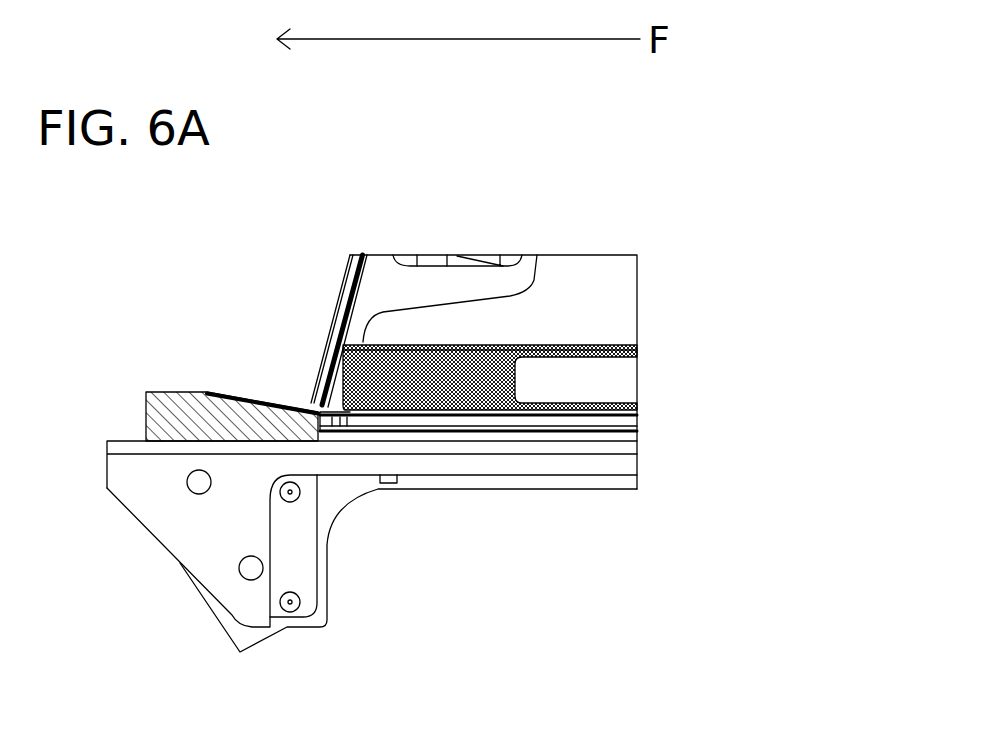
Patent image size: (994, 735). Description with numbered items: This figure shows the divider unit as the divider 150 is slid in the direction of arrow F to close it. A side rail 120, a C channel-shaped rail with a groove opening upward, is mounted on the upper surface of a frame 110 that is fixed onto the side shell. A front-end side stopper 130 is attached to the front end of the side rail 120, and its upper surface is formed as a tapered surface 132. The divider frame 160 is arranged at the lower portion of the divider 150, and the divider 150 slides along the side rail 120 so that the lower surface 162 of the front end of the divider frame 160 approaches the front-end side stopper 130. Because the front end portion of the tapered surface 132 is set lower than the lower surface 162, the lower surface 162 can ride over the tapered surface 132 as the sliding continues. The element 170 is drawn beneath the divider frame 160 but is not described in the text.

The frame 110 is at (370, 463).
The side rail 120 is at (345, 412).
The front-end side stopper 130 is at (177, 422).
The tapered surface 132 is at (253, 403).
The divider 150 is at (573, 288).
The divider frame 160 is at (493, 373).
The lower surface 162 is at (347, 417).
The adhesive layer 170 is at (487, 410).